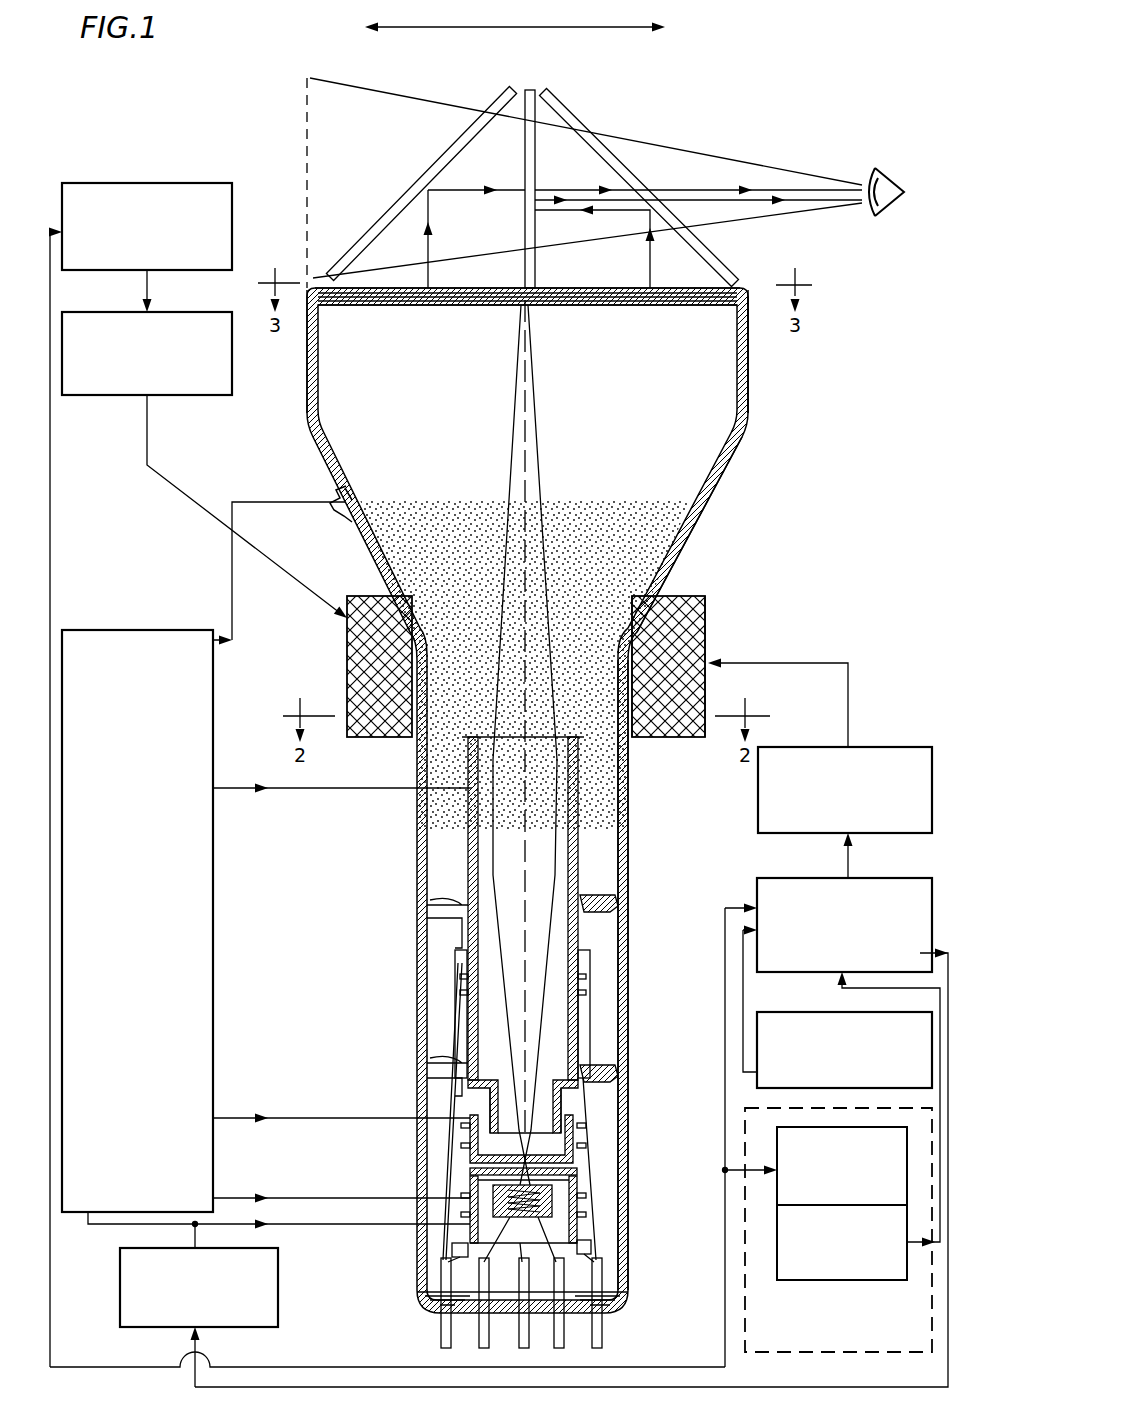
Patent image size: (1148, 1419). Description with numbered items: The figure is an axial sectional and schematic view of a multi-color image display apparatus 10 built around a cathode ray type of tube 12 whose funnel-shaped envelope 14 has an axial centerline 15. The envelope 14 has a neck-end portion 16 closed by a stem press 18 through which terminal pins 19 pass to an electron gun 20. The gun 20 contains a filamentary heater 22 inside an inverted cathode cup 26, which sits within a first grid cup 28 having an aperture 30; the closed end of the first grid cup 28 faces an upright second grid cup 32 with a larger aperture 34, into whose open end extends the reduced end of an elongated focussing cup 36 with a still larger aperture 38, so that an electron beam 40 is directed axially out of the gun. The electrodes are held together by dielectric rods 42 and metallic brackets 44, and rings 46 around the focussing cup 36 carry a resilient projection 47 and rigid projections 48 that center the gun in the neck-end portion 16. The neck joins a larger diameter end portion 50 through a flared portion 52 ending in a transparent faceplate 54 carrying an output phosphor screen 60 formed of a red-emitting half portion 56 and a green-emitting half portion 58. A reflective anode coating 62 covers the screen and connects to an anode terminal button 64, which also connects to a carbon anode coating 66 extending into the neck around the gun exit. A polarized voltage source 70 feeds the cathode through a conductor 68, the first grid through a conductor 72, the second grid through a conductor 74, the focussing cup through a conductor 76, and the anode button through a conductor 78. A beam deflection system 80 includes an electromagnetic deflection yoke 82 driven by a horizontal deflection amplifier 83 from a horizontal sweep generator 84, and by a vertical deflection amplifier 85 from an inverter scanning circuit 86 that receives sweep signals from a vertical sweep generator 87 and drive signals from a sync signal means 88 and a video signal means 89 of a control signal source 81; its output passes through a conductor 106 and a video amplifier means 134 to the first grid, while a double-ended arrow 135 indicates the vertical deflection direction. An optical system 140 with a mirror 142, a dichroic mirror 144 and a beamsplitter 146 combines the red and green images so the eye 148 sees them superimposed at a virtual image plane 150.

The multi-color image display apparatus 10 is at (796, 490).
The cathode ray type of tube 12 is at (692, 574).
The funnel-shaped envelope 14 is at (638, 812).
The axial centerline 15 is at (535, 345).
The neck-end portion 16 is at (632, 844).
The stem press 18 is at (622, 1312).
The terminal pins 19 is at (540, 1356).
The electron gun 20 is at (526, 1015).
The filamentary heater 22 is at (556, 1215).
The cathode cup 26 is at (575, 1197).
The first grid cup 28 is at (577, 1172).
The aperture 30 is at (470, 1180).
The second grid cup 32 is at (580, 1116).
The aperture 34 is at (470, 1150).
The focussing cup 36 is at (572, 1014).
The aperture 38 is at (545, 1062).
The electron beam 40 is at (515, 420).
The dielectric rods 42 is at (455, 966).
The metallic brackets 44 is at (460, 993).
The rings 46 is at (455, 903).
The resilient projection 47 is at (618, 900).
The rigid projections 48 is at (440, 918).
The larger diameter end portion 50 is at (750, 355).
The flared portion 52 is at (727, 490).
The faceplate 54 is at (602, 290).
The half portion 56 is at (394, 302).
The half portion 58 is at (646, 302).
The output phosphor screen 60 is at (472, 318).
The anode coating 62 is at (346, 302).
The anode terminal button 64 is at (350, 490).
The anode coating 66 is at (416, 504).
The conductor 68 is at (300, 1195).
The polarized voltage source 70 is at (66, 630).
The conductor 72 is at (302, 1230).
The conductor 74 is at (308, 1115).
The conductor 76 is at (290, 792).
The conductor 78 is at (233, 620).
The beam deflection system 80 is at (733, 645).
The control signal source 81 is at (867, 1352).
The electromagnetic deflection yoke 82 is at (360, 596).
The horizontal deflection amplifier 83 is at (108, 396).
The horizontal sweep generator 84 is at (108, 270).
The vertical deflection amplifier 85 is at (892, 748).
The inverter scanning circuit 86 is at (892, 879).
The vertical sweep generator 87 is at (763, 1013).
The sync signal means 88 is at (777, 1156).
The video signal means 89 is at (777, 1258).
The conductor 106 is at (946, 1368).
The video amplifier means 134 is at (280, 1316).
The double-ended arrow 135 is at (612, 30).
The optical system 140 is at (615, 124).
The mirror 142 is at (436, 178).
The dichroic mirror 144 is at (527, 162).
The beamsplitter 146 is at (608, 152).
The eye 148 is at (886, 176).
The virtual image plane 150 is at (312, 170).